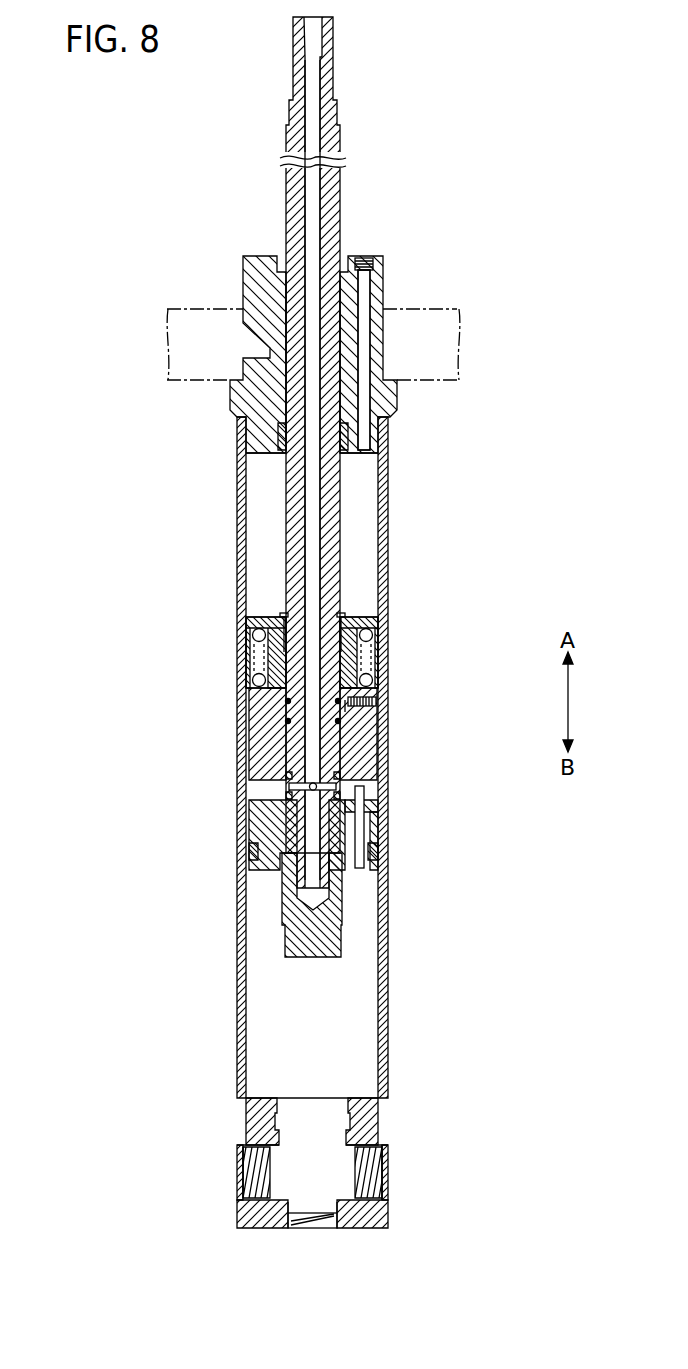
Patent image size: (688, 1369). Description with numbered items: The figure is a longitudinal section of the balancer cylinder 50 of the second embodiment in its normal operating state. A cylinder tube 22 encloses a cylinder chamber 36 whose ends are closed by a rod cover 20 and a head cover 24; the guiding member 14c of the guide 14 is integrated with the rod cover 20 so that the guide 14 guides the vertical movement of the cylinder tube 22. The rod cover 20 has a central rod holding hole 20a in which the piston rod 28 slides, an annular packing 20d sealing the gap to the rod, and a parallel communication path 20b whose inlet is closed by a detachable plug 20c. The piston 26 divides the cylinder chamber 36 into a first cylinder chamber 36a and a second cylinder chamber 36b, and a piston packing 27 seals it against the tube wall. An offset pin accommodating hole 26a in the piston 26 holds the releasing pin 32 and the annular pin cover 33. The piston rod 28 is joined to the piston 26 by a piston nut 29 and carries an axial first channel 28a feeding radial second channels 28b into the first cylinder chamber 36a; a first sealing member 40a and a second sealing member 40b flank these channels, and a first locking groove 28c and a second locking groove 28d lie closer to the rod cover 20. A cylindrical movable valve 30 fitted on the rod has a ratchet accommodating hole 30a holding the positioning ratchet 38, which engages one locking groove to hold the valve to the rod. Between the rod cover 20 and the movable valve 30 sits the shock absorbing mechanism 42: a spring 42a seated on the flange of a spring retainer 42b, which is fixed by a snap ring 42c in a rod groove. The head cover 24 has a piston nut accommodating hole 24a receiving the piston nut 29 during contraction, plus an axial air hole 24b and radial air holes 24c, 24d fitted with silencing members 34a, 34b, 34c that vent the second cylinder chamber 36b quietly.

The balancer cylinder 50 is at (223, 91).
The guide 14 is at (348, 315).
The guiding member 14c is at (433, 307).
The rod cover 20 is at (243, 268).
The rod holding hole 20a is at (345, 292).
The communication path 20b is at (362, 398).
The plug 20c is at (361, 258).
The annular packing 20d is at (280, 440).
The cylinder tube 22 is at (389, 525).
The head cover 24 is at (315, 1175).
The piston nut accommodating hole 24a is at (278, 1136).
The air hole 24b is at (331, 1230).
The air hole 24c is at (243, 1192).
The air hole 24d is at (384, 1153).
The piston 26 is at (316, 830).
The pin accommodating hole 26a is at (344, 830).
The piston packing 27 is at (253, 855).
The piston rod 28 is at (287, 520).
The first channel 28a is at (312, 545).
The second channels 28b is at (345, 787).
The first locking groove 28c is at (286, 701).
The second locking groove 28d is at (286, 721).
The piston nut 29 is at (295, 938).
The movable valve 30 is at (365, 731).
The ratchet accommodating hole 30a is at (350, 705).
The releasing pin 32 is at (361, 862).
The pin cover 33 is at (379, 806).
The silencing member 34a is at (305, 1228).
The silencing member 34b is at (250, 1187).
The silencing member 34c is at (379, 1185).
The cylinder chamber 36 is at (376, 775).
The first cylinder chamber 36a is at (358, 597).
The second cylinder chamber 36b is at (365, 1004).
The positioning ratchet 38 is at (379, 702).
The first sealing member 40a is at (286, 776).
The second sealing member 40b is at (286, 795).
The shock absorbing mechanism 42 is at (260, 639).
The spring 42a is at (278, 661).
The spring retainer 42b is at (255, 632).
The snap ring 42c is at (282, 615).